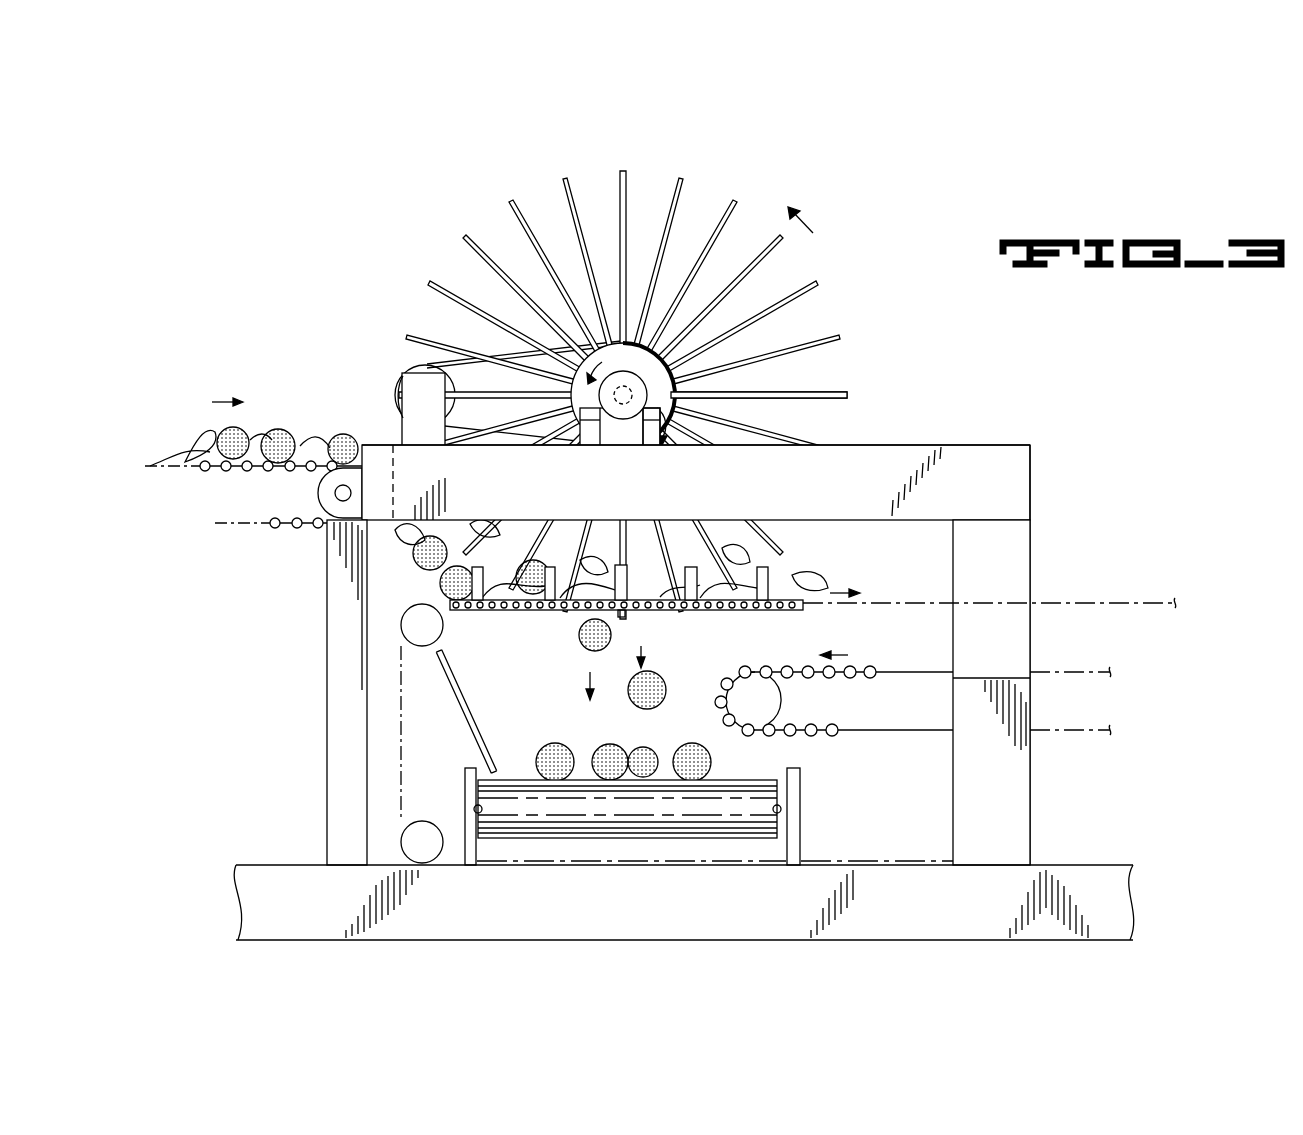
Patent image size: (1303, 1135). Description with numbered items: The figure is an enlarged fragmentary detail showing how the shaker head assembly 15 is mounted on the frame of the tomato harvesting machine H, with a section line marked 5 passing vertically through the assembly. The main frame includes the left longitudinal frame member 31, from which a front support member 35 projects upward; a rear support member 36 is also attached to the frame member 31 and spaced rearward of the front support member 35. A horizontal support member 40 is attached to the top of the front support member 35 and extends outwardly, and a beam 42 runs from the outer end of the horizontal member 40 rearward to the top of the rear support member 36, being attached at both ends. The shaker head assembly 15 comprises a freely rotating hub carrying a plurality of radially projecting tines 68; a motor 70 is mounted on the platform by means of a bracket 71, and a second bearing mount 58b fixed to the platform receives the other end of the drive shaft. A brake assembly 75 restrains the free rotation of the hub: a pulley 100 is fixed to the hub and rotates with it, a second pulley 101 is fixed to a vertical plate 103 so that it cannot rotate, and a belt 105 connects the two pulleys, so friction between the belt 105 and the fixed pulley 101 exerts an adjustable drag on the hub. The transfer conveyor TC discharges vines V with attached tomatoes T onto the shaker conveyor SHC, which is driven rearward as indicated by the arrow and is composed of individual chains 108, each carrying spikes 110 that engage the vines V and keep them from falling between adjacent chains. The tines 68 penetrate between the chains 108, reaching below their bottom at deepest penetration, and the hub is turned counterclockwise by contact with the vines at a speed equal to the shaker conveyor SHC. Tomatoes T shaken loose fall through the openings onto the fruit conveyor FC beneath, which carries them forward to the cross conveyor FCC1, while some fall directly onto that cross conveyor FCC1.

The shaker head assembly 15 is at (848, 378).
The tines 68 is at (482, 200).
The pulley 100 is at (708, 375).
The motor 70 is at (610, 445).
The bracket 71 is at (620, 420).
The second bearing mount 58b is at (681, 445).
The brake assembly 75 is at (480, 346).
The belt 105 is at (416, 366).
The second pulley 101 is at (398, 363).
The vertical plate 103 is at (408, 419).
The horizontal support member 40 is at (393, 468).
The beam 42 is at (845, 500).
The front support member 35 is at (336, 693).
The rear support member 36 is at (1031, 786).
The longitudinal frame member 31 is at (744, 913).
The spikes 110 is at (558, 530).
The chains 108 is at (531, 611).
The transfer conveyor TC is at (150, 465).
The tomatoes T is at (290, 430).
The vines V is at (330, 432).
The shaker conveyor SHC is at (792, 618).
The fruit conveyor FC is at (866, 665).
The cross conveyor FCC1 is at (768, 798).
The tomato harvesting machine H is at (1038, 467).
The section line 5- 5 is at (553, 120).